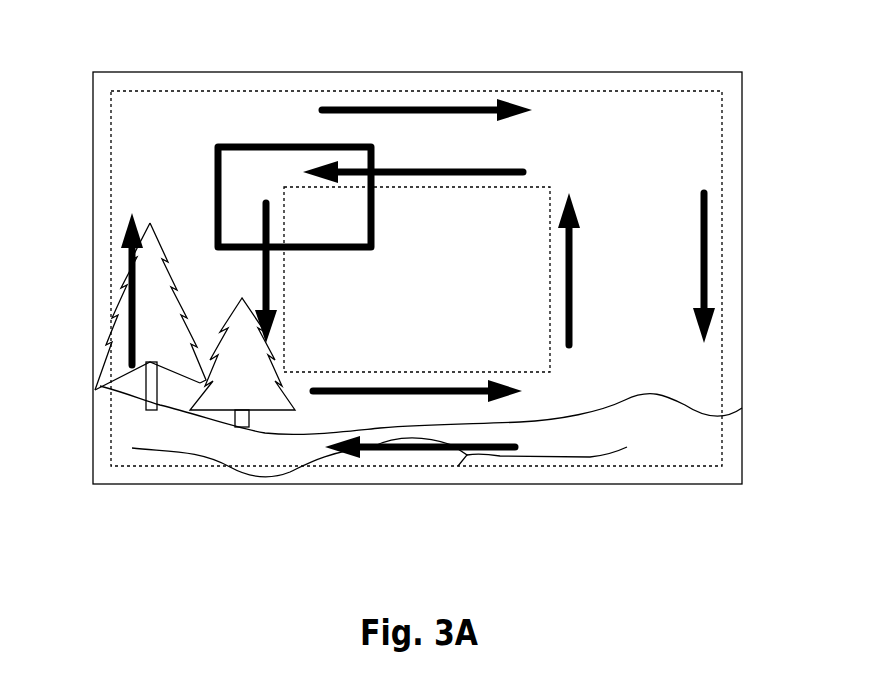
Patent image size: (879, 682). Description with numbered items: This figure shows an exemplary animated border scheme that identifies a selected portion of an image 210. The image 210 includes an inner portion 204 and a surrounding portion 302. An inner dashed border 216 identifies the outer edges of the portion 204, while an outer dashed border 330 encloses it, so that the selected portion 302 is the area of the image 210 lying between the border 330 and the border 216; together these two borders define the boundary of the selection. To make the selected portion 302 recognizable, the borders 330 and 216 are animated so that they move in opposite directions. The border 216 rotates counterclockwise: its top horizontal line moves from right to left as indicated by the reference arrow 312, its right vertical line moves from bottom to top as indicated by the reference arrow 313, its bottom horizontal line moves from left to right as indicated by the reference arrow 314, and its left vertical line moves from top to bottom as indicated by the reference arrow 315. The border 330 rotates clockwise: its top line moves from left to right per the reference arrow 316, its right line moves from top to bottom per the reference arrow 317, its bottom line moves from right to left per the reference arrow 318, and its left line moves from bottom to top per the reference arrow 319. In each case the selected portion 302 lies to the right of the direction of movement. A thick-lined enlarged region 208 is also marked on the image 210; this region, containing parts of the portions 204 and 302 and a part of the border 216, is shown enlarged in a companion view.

The portion 204 is at (417, 279).
The enlarged region 208 is at (222, 143).
The image 210 is at (742, 272).
The border 216 is at (532, 186).
The selected portion 302 is at (635, 245).
The reference arrow 312 is at (420, 175).
The reference arrow 313 is at (572, 316).
The reference arrow 314 is at (522, 390).
The reference arrow 315 is at (264, 269).
The reference arrow 316 is at (370, 108).
The reference arrow 317 is at (707, 222).
The reference arrow 318 is at (372, 446).
The reference arrow 319 is at (128, 251).
The border 330 is at (703, 92).